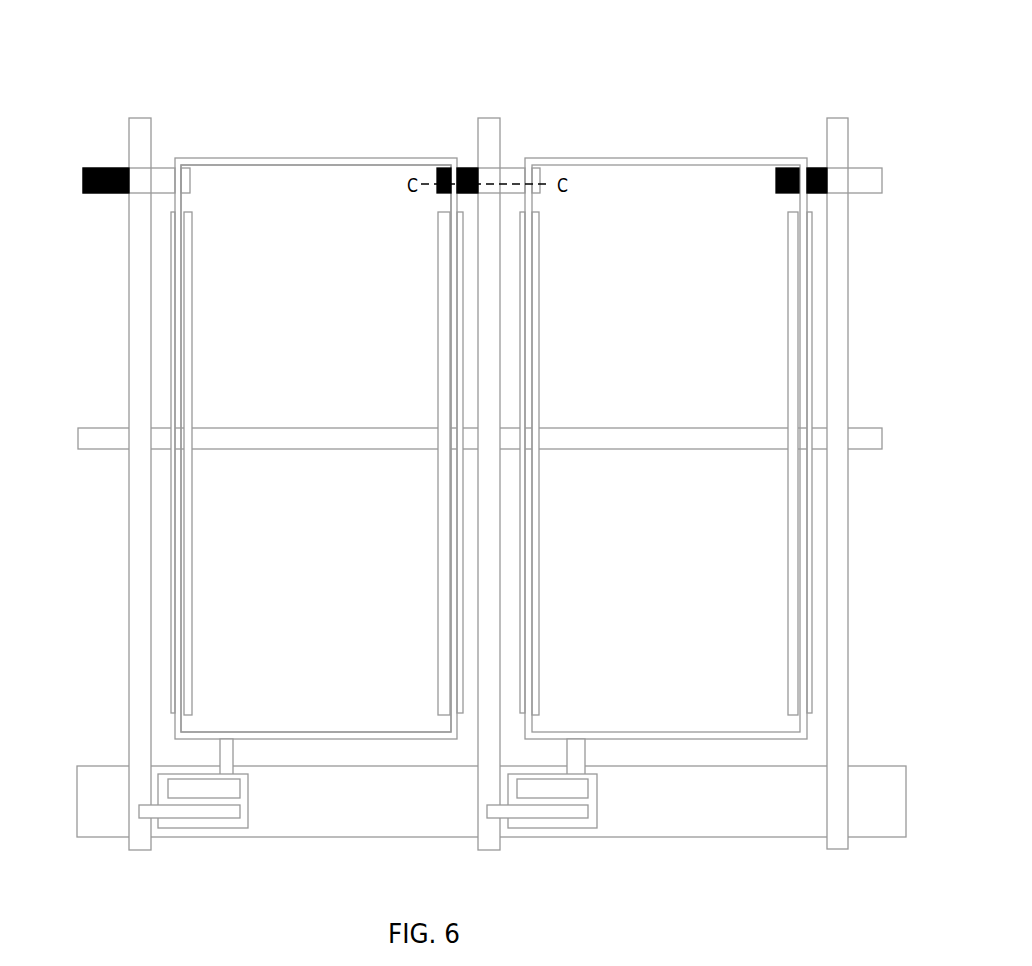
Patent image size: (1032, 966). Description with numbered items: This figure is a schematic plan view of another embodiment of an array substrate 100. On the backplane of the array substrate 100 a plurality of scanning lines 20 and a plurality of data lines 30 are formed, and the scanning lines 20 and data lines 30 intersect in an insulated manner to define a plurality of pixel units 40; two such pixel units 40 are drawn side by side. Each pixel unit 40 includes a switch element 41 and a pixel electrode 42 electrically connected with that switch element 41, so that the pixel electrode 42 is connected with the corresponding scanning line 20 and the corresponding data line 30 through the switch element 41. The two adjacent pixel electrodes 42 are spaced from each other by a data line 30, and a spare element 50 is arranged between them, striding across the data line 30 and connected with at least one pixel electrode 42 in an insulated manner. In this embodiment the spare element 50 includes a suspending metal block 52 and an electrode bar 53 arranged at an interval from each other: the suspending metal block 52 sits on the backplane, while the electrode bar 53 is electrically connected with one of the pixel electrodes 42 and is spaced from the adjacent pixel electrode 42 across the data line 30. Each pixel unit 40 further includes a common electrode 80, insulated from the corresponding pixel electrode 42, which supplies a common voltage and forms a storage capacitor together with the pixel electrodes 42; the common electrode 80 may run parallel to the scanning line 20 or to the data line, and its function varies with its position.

The array substrate 100 is at (535, 36).
The scanning line 20 is at (113, 828).
The data line 30 is at (137, 142).
The pixel unit 40 is at (302, 163).
The switch element 41 is at (206, 820).
The pixel electrode 42 is at (343, 193).
The spare element 50 is at (104, 152).
The suspending metal block 52 is at (91, 195).
The electrode bar 53 is at (163, 183).
The common electrode 80 is at (190, 312).